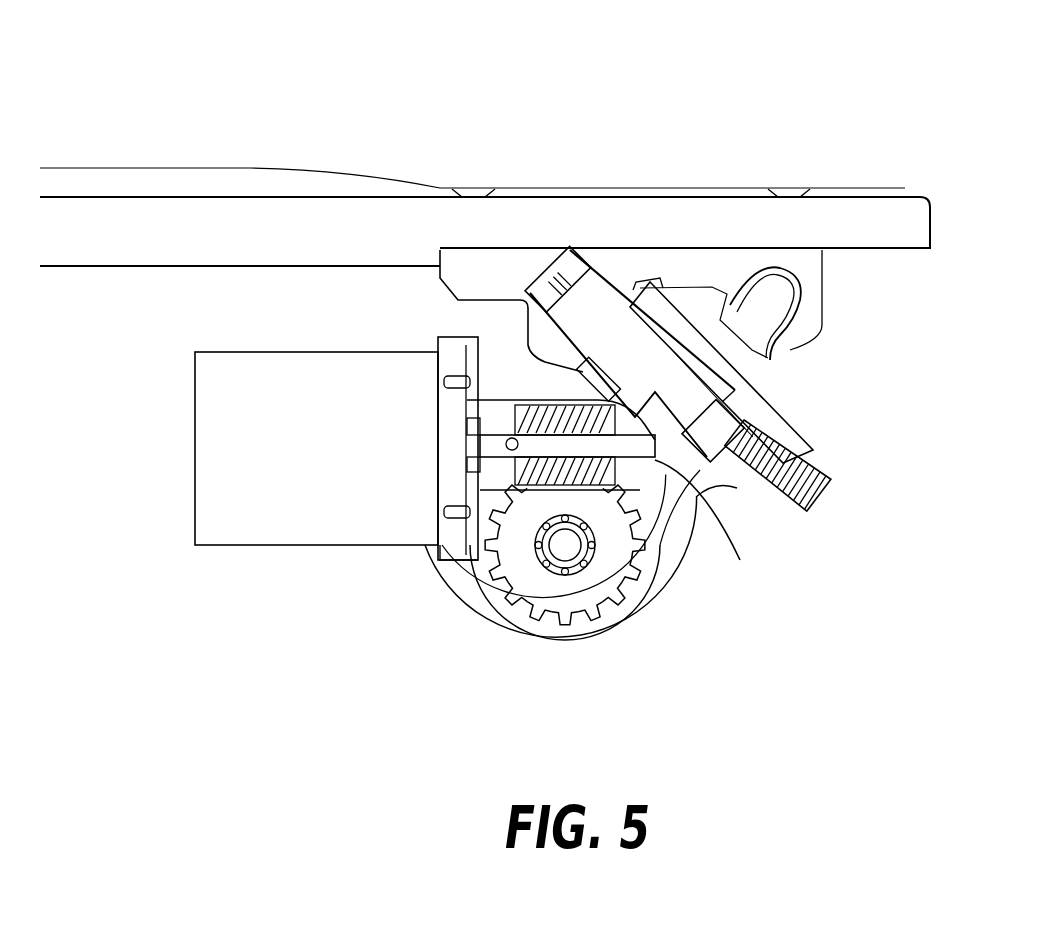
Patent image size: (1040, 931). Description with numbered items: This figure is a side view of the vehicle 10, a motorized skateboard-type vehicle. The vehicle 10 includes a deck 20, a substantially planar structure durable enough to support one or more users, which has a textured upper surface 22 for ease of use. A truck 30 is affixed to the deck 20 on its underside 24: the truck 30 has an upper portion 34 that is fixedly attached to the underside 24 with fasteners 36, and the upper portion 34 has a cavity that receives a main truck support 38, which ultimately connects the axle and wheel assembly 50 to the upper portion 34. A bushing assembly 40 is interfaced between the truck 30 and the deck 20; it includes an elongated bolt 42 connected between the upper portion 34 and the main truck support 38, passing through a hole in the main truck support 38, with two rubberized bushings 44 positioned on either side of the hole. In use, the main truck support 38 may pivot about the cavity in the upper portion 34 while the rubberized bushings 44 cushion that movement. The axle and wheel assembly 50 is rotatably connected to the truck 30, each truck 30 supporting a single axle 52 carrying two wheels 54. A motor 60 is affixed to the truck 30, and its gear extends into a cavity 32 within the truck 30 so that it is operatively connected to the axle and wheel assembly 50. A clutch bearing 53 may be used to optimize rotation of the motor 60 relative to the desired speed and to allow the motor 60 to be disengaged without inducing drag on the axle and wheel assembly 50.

The vehicle 10 is at (904, 150).
The deck 20 is at (334, 228).
The textured upper surface 22 is at (580, 187).
The underside 24 is at (151, 267).
The truck 30 is at (767, 312).
The cavity 32 is at (737, 488).
The upper portion 34 is at (802, 262).
The fasteners 36 is at (788, 192).
The main truck support 38 is at (683, 433).
The bushing assembly 40 is at (818, 426).
The elongated bolt 42 is at (585, 298).
The rubberized bushings 44 is at (683, 335).
The axle and wheel assembly 50 is at (445, 646).
The axle 52 is at (562, 553).
The clutch bearing 53 is at (555, 573).
The wheels 54 is at (692, 582).
The motor 60 is at (232, 475).